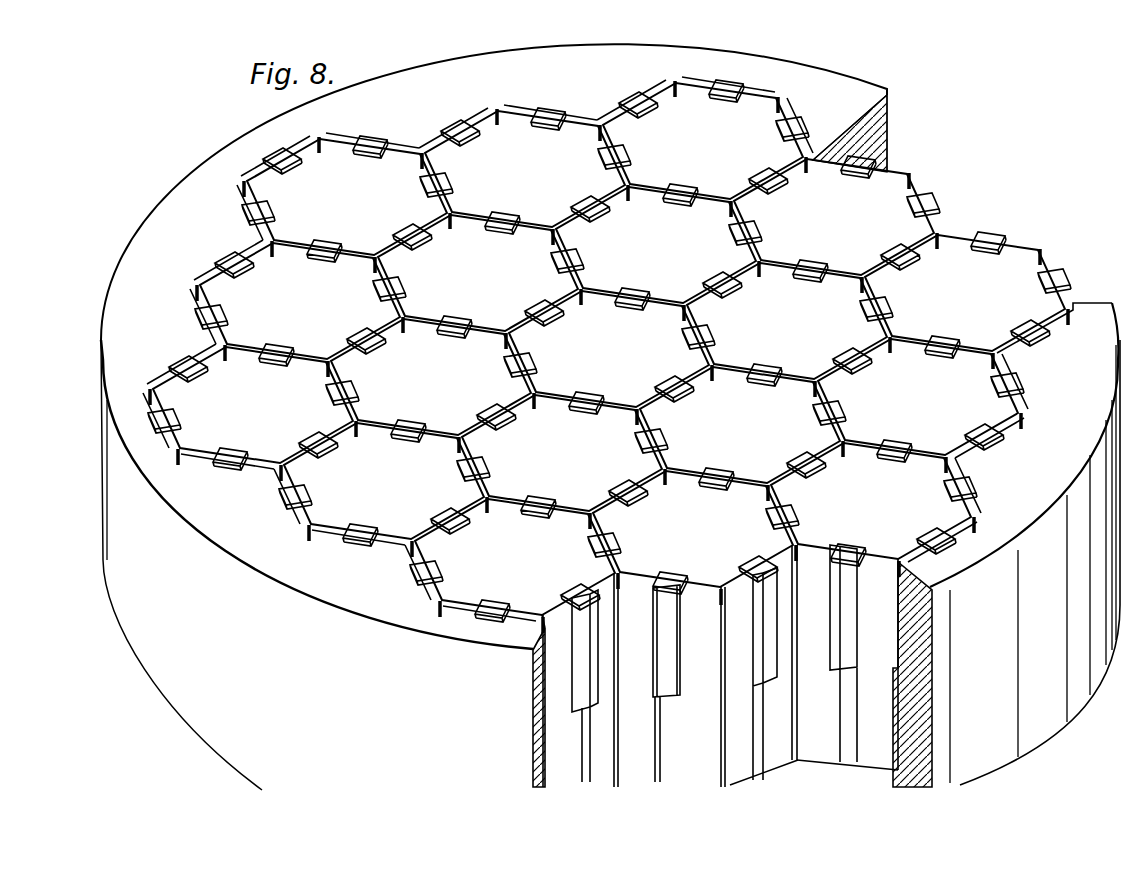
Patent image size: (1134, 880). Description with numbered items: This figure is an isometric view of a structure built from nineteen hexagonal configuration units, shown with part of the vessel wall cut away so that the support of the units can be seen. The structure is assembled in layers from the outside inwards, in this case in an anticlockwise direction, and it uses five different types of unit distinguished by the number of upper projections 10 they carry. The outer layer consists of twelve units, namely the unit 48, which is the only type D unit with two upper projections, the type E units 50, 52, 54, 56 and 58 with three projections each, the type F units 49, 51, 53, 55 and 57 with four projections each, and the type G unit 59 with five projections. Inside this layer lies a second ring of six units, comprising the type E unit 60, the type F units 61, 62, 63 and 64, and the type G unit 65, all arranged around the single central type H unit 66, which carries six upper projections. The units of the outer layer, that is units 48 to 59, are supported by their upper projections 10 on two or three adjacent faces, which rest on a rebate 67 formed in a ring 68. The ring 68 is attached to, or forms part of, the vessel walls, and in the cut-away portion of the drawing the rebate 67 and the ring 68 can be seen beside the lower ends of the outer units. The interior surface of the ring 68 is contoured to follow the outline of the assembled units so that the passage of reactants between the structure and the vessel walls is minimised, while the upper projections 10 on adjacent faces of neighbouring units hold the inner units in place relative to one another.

The upper projections 10 is at (928, 201).
The unit 48 is at (904, 411).
The unit 49 is at (951, 307).
The unit 50 is at (820, 231).
The unit 51 is at (689, 155).
The unit 52 is at (511, 183).
The unit 53 is at (333, 211).
The unit 54 is at (286, 315).
The unit 55 is at (239, 419).
The unit 56 is at (370, 495).
The unit 57 is at (501, 571).
The unit 58 is at (679, 543).
The unit 59 is at (857, 515).
The unit 60 is at (773, 335).
The unit 61 is at (642, 259).
The unit 62 is at (464, 287).
The unit 63 is at (417, 391).
The unit 64 is at (548, 467).
The unit 65 is at (726, 439).
The unit 66 is at (595, 363).
The rebate 67 is at (903, 660).
The ring 68 is at (1090, 317).